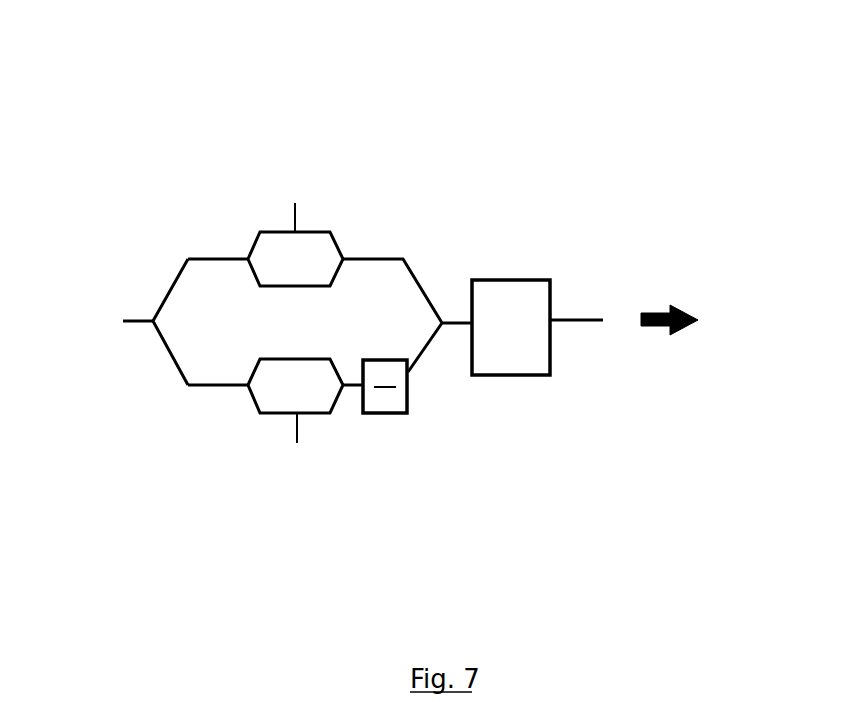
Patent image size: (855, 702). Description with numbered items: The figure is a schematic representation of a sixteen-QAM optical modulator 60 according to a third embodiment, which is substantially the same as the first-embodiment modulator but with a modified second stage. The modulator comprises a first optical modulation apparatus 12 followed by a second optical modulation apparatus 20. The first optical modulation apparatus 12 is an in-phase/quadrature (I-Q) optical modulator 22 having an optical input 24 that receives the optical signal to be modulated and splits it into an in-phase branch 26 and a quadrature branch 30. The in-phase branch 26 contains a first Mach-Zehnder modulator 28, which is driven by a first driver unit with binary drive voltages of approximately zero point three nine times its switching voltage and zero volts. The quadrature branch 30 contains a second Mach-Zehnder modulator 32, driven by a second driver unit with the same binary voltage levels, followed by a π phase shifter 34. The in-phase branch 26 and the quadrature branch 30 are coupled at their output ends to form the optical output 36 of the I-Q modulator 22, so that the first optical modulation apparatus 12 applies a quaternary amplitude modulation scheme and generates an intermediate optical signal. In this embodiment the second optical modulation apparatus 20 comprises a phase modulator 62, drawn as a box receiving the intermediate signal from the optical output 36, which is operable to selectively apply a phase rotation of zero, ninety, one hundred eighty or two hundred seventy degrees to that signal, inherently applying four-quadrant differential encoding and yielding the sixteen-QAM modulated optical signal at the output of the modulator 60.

The first optical modulation apparatus 12 is at (192, 517).
The second optical modulation apparatus 20 is at (553, 423).
The in-phase/quadrature (I-Q) optical modulator 22 is at (173, 200).
The optical input 24 is at (130, 325).
The in-phase branch 26 is at (168, 276).
The first Mach-Zehnder modulator 28 is at (328, 228).
The quadrature branch 30 is at (172, 380).
The second Mach-Zehnder modulator 32 is at (321, 425).
The π phase shifter 34 is at (410, 405).
The optical output 36 is at (445, 318).
The 16-QAM optical modulator 60 is at (490, 95).
The phase modulator 62 is at (522, 280).